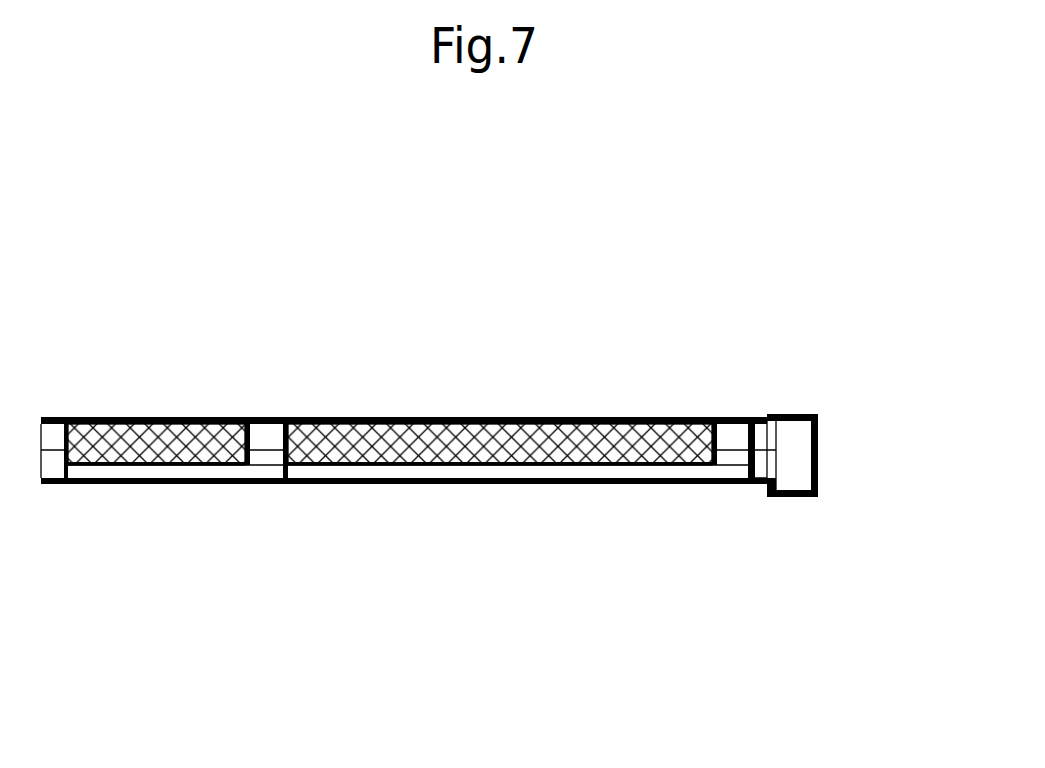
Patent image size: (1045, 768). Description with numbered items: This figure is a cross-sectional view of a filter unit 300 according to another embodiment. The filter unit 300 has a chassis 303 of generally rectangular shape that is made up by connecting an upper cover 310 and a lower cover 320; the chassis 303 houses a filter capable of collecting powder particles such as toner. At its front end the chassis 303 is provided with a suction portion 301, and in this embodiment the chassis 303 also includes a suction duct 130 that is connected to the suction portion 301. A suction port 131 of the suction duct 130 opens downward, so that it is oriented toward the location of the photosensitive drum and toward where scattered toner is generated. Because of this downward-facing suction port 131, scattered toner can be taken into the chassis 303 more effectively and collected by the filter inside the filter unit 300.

The filter unit 300 is at (408, 472).
The chassis 303 is at (452, 360).
The upper cover 310 is at (487, 417).
The lower cover 320 is at (457, 482).
The suction portion 301 is at (768, 465).
The suction duct 130 is at (850, 500).
The suction port 131 is at (792, 488).